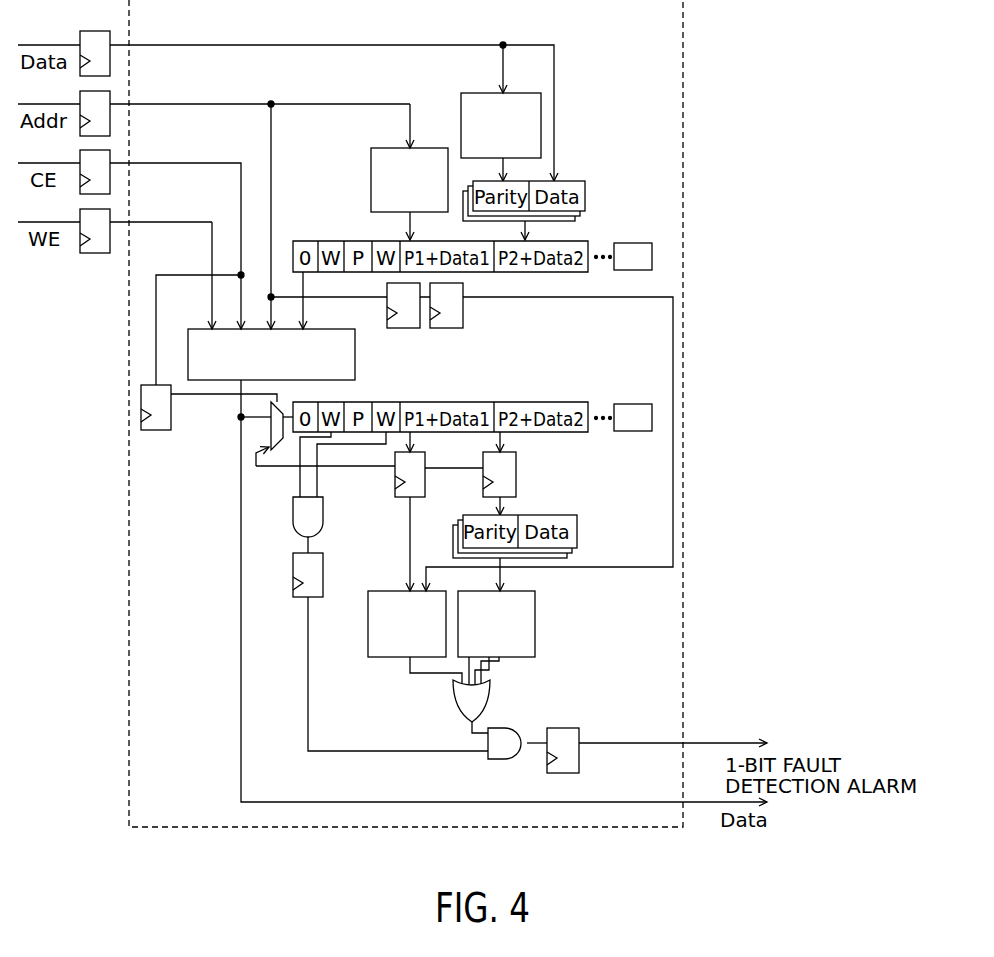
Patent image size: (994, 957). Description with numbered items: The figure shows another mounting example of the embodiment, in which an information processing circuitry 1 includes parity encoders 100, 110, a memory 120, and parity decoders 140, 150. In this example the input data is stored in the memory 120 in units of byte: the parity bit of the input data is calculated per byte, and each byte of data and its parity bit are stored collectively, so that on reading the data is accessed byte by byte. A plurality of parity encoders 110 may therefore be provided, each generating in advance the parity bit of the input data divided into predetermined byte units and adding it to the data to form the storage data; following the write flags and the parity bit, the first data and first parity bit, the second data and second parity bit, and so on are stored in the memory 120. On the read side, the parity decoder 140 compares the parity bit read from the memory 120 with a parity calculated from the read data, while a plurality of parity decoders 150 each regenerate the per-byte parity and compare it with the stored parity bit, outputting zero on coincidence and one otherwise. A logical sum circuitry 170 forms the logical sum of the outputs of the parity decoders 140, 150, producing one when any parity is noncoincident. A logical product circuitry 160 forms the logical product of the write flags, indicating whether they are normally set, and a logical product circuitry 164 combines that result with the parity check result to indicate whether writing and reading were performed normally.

The information processing circuitry 1 is at (688, 32).
The parity encoder 100 is at (371, 182).
The parity encoder 110 is at (541, 125).
The memory 120 is at (355, 356).
The parity decoder 140 is at (379, 590).
The parity decoder 150 is at (535, 627).
The logical product circuitry 160 is at (293, 501).
The logical product circuitry 164 is at (513, 728).
The logical sum circuitry 170 is at (454, 720).